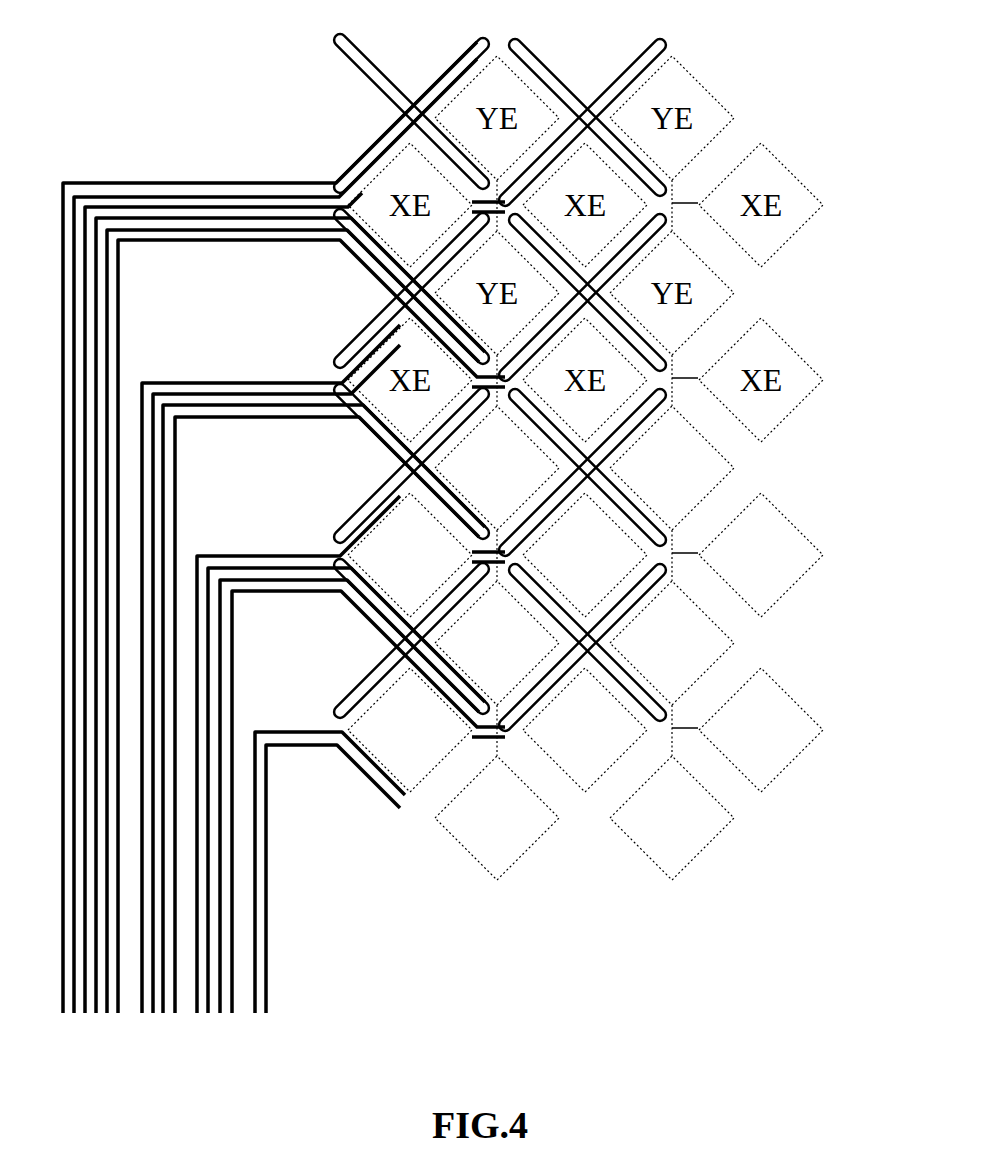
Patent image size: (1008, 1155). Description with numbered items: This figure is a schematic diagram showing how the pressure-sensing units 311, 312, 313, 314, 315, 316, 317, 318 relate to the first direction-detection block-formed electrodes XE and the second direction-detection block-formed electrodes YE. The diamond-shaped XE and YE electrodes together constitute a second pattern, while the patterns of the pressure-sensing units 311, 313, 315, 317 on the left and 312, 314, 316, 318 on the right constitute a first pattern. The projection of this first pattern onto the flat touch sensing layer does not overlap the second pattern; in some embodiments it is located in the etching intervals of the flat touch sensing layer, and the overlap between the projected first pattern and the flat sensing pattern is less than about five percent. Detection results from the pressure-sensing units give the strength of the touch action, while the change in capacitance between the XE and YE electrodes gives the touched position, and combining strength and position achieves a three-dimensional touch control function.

The pressure-sensing unit 311 is at (345, 183).
The pressure-sensing unit 312 is at (642, 162).
The pressure-sensing unit 313 is at (345, 358).
The pressure-sensing unit 314 is at (642, 337).
The pressure-sensing unit 315 is at (345, 533).
The pressure-sensing unit 316 is at (642, 512).
The pressure-sensing unit 317 is at (340, 705).
The pressure-sensing unit 318 is at (642, 687).